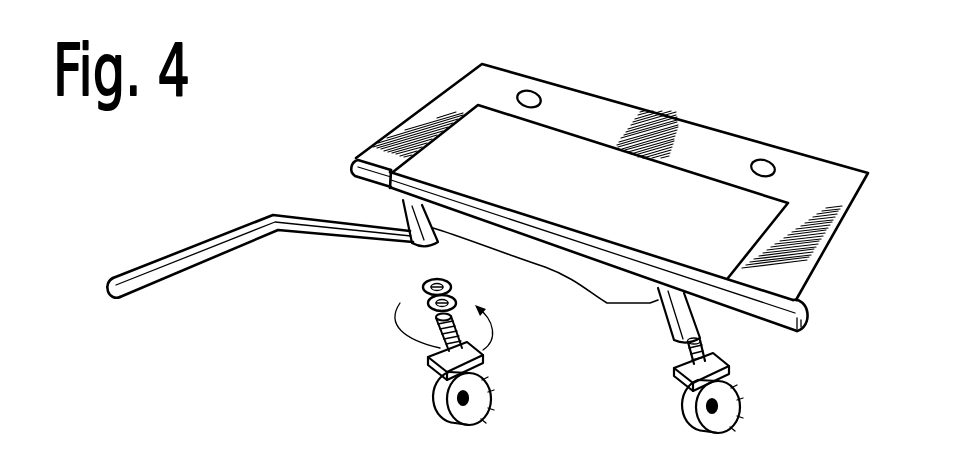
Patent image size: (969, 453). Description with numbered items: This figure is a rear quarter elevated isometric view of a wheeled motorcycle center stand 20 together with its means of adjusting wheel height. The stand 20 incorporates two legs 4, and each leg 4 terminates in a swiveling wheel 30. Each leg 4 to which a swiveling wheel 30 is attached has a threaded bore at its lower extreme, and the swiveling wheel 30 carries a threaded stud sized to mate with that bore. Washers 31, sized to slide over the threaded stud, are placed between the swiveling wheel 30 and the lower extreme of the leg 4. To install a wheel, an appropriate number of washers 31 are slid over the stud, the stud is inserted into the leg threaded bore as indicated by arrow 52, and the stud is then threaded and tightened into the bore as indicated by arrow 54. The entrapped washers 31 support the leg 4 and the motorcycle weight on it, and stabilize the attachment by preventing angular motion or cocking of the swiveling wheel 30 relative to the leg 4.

The wheeled motorcycle center stand 20 is at (798, 97).
The leg 4 is at (456, 286).
The swiveling wheel 30 is at (672, 407).
The washer 31 is at (458, 304).
The arrow 52 is at (438, 273).
The arrow 54 is at (407, 336).